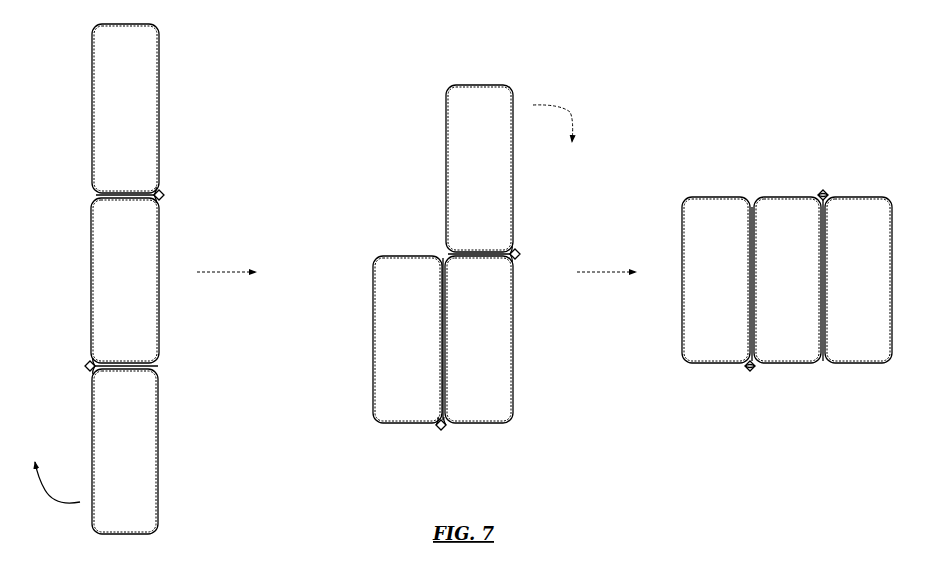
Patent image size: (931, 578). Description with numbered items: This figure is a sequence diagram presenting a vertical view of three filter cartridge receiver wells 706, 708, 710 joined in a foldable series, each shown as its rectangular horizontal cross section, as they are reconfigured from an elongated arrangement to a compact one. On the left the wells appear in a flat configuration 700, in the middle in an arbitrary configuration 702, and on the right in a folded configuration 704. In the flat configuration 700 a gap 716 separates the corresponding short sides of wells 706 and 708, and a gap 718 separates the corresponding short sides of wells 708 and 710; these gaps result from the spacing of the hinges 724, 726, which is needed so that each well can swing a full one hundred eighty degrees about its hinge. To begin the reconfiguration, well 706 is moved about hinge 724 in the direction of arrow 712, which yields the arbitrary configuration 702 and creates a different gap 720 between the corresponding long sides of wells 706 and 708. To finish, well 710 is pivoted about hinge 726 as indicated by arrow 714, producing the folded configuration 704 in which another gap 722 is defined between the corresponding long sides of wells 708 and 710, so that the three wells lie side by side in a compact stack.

The flat configuration 700 is at (150, 280).
The arbitrary configuration 702 is at (445, 239).
The folded configuration 704 is at (787, 250).
The filter cartridge receiver well 706 is at (158, 403).
The filter cartridge receiver well 708 is at (159, 252).
The filter cartridge receiver well 710 is at (159, 127).
The arrow 712 is at (56, 504).
The arrow 714 is at (573, 112).
The gap 716 is at (158, 366).
The gap 718 is at (96, 195).
The gap 720 is at (440, 258).
The gap 722 is at (823, 363).
The hinge 724 is at (85, 366).
The hinge 726 is at (164, 193).